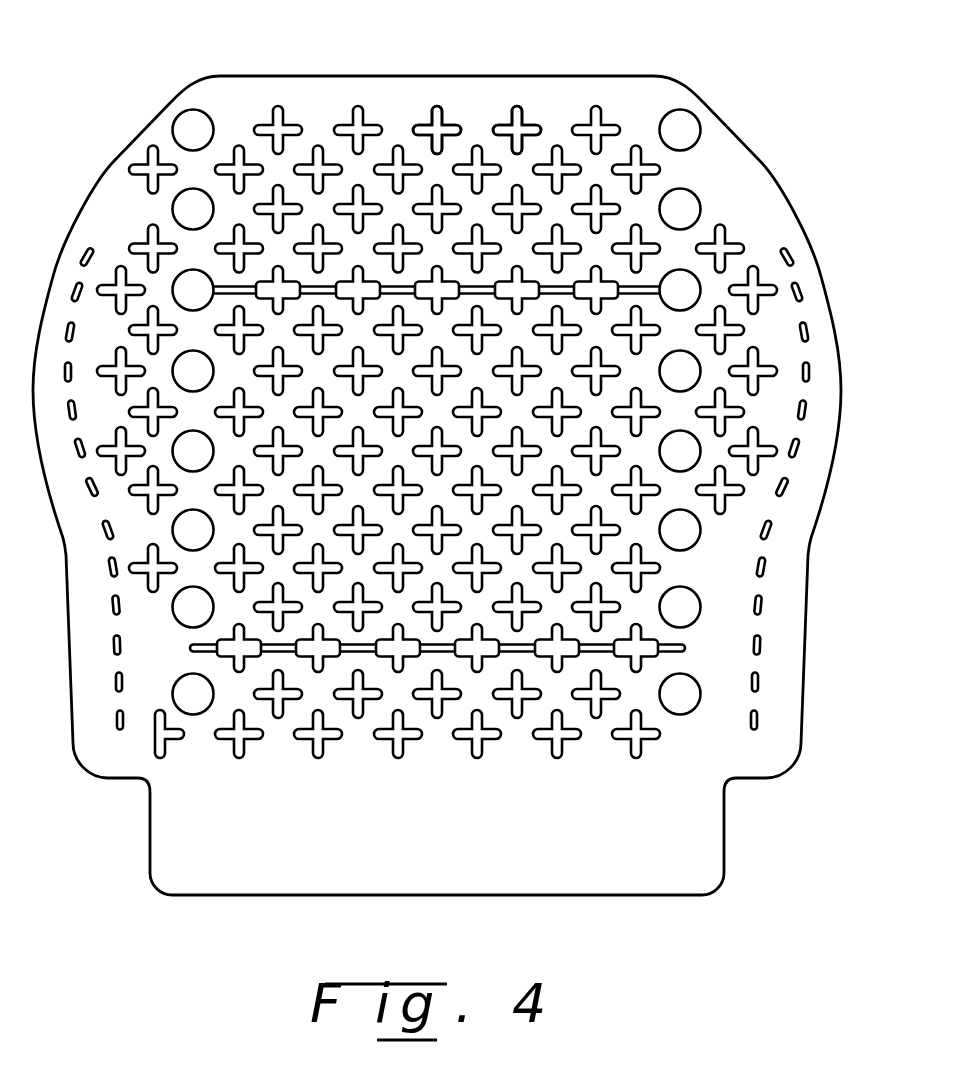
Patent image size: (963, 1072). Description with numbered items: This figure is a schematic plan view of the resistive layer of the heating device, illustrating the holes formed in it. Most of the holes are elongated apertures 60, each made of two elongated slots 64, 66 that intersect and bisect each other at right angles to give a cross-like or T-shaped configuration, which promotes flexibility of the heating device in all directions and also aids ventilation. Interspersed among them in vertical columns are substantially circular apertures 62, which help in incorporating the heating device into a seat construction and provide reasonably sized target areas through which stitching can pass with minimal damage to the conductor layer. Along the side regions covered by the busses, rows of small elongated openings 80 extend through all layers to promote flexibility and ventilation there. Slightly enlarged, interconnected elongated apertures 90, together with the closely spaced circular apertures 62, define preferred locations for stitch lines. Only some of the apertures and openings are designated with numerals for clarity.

The elongated apertures 60 is at (343, 113).
The circular apertures 62 is at (193, 110).
The elongated slot 64 is at (428, 118).
The elongated slot 66 is at (447, 126).
The elongated openings 80 is at (85, 257).
The interconnected elongated apertures 90 is at (657, 640).